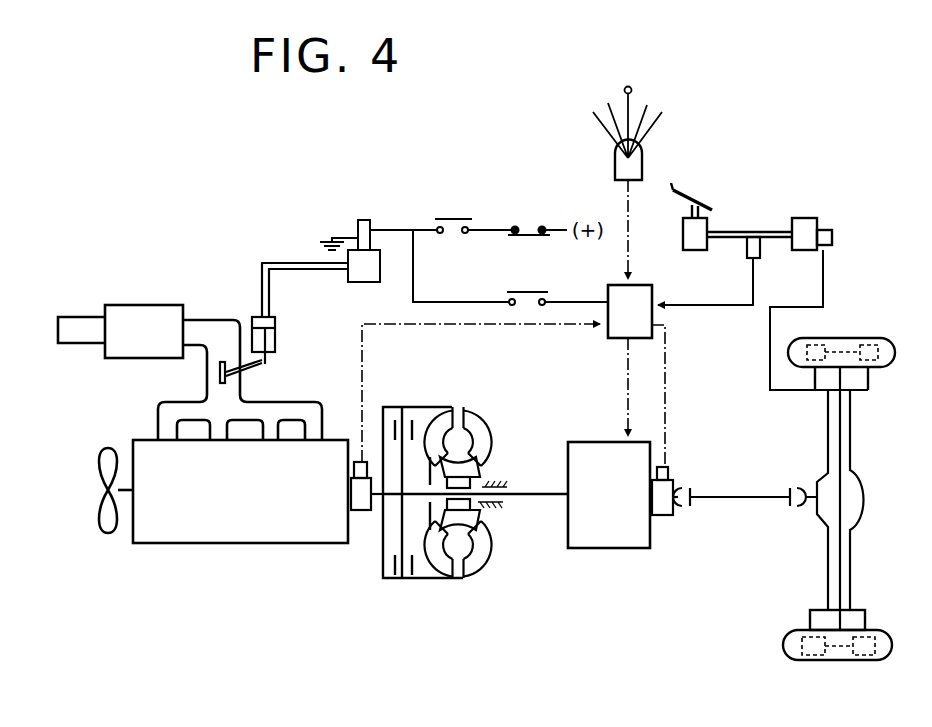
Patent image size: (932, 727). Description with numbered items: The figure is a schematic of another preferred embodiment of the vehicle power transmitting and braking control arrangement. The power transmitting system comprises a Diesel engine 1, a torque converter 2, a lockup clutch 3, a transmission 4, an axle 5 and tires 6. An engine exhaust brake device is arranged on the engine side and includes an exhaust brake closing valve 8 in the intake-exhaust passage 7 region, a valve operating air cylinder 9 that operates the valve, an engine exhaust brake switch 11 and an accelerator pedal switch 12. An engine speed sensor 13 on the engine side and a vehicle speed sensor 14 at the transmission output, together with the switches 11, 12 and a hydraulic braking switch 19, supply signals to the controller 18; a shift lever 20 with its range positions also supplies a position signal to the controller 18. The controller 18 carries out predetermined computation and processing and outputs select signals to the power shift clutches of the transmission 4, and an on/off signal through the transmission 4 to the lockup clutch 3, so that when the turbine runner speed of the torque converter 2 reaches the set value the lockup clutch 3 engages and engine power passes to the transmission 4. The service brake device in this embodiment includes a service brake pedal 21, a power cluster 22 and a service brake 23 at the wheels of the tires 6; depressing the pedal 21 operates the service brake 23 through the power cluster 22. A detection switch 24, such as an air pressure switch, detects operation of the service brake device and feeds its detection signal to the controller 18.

The Diesel engine 1 is at (187, 545).
The torque converter 2 is at (462, 580).
The lockup clutch 3 is at (395, 580).
The transmission 4 is at (620, 550).
The axle 5 is at (852, 552).
The tires 6 is at (897, 345).
The intake manifold 7 is at (207, 390).
The exhaust brake closing valve 8 is at (235, 375).
The valve operating air cylinder 9 is at (252, 318).
The engine exhaust brake switch 11 is at (460, 218).
The accelerator pedal switch 12 is at (529, 232).
The engine speed sensor 13 is at (360, 513).
The vehicle speed sensor 14 is at (660, 517).
The controller 18 is at (612, 340).
The hydraulic braking switch 19 is at (530, 290).
The shift lever 20 is at (634, 90).
The service brake pedal 21 is at (700, 196).
The power cluster 22 is at (805, 218).
The service brake 23 is at (866, 343).
The detection switch 24 is at (745, 255).